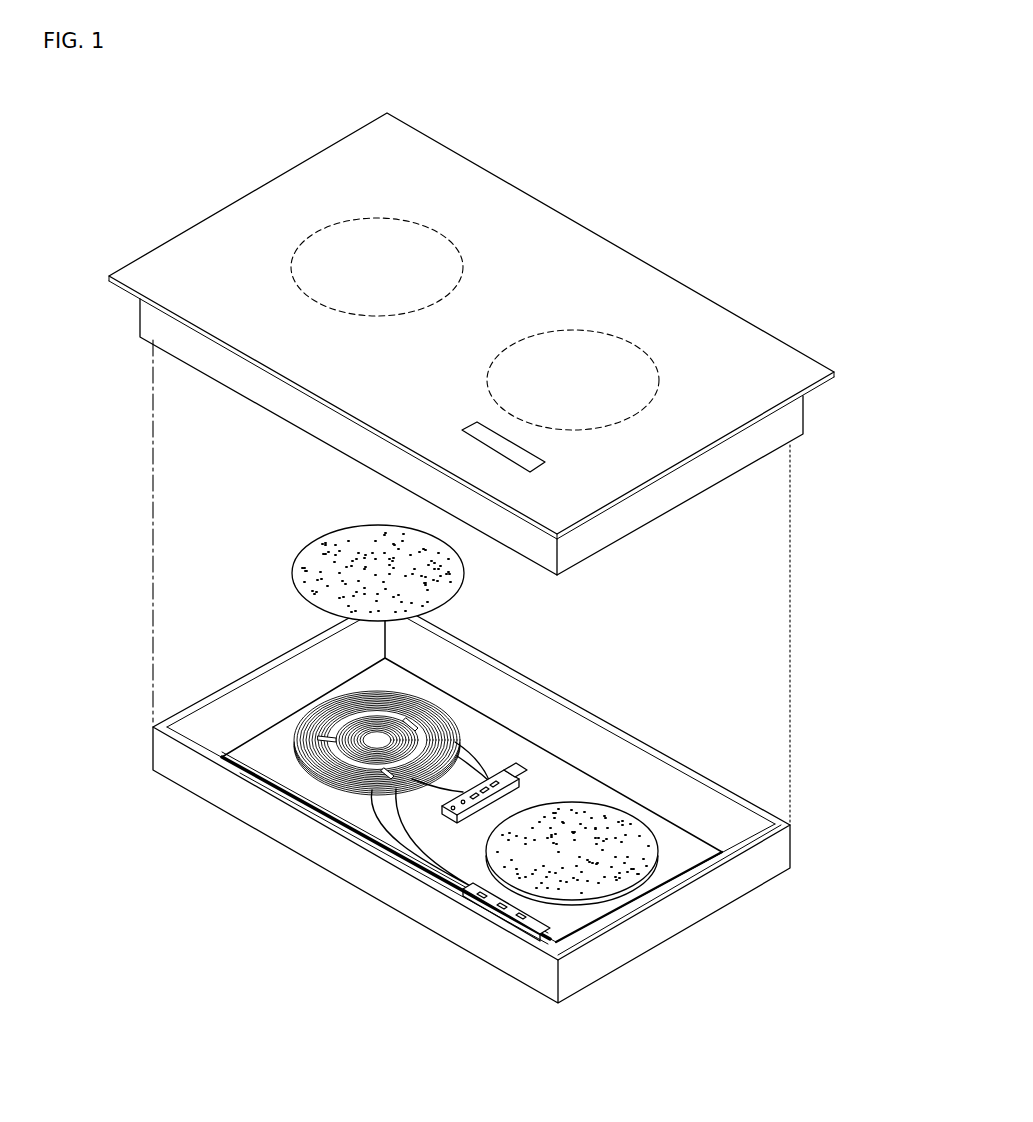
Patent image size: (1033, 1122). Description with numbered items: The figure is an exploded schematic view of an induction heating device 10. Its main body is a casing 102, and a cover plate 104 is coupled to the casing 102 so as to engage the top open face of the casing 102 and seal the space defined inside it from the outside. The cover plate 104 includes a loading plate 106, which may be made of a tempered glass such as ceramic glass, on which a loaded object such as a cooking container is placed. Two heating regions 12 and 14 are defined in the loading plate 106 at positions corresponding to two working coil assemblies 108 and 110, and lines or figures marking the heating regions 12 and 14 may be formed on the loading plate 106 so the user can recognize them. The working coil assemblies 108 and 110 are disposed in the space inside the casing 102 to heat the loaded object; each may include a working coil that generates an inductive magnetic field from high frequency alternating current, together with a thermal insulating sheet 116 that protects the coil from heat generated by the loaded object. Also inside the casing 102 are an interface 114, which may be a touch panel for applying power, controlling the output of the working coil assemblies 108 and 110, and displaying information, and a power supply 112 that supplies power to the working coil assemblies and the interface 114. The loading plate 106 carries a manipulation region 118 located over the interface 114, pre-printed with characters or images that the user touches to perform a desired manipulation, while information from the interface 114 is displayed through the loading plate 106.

The induction heating device 10 is at (576, 188).
The heating region 12 is at (412, 222).
The heating region 14 is at (608, 335).
The casing 102 is at (393, 890).
The cover plate 104 is at (140, 314).
The loading plate 106 is at (740, 435).
The working coil assembly 108 is at (300, 786).
The working coil assembly 110 is at (589, 920).
The power supply 112 is at (527, 770).
The interface 114 is at (503, 917).
The thermal insulating sheet 116 is at (313, 560).
The manipulation region 118 is at (535, 468).